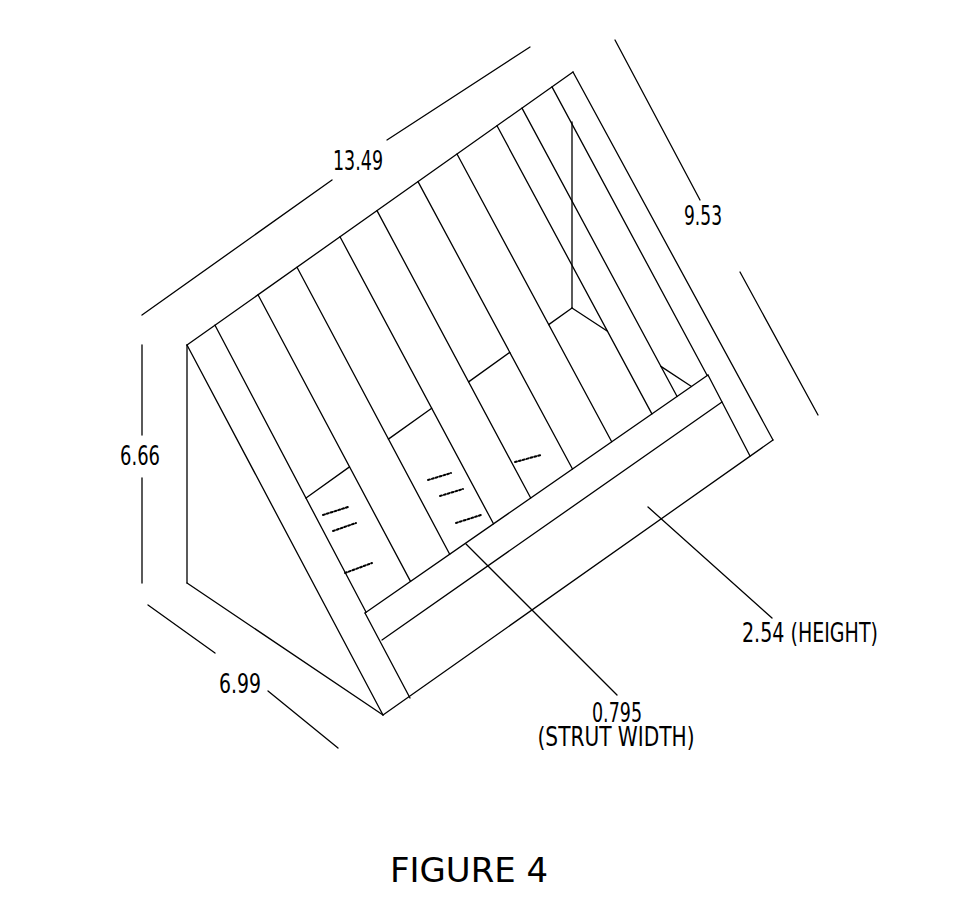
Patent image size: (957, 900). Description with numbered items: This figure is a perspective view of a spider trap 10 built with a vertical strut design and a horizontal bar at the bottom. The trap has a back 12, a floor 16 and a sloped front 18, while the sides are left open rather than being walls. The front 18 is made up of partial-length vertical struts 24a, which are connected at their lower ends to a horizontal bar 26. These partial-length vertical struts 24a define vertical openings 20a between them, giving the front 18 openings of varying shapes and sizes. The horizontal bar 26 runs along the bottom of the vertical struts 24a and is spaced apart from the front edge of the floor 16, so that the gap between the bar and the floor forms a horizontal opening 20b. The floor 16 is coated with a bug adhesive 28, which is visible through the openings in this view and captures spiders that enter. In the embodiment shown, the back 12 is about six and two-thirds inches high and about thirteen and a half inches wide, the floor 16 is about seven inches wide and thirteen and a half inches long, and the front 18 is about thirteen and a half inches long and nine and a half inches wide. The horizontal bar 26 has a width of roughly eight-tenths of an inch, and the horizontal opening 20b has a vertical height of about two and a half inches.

The spider trap 10 is at (810, 28).
The back 12 is at (215, 487).
The floor 16 is at (338, 662).
The front 18 is at (708, 390).
The vertical openings 20a is at (243, 335).
The horizontal opening 20b is at (547, 573).
The partial-length vertical struts 24a is at (602, 290).
The horizontal bar 26 is at (555, 500).
The bug adhesive 28 is at (345, 528).